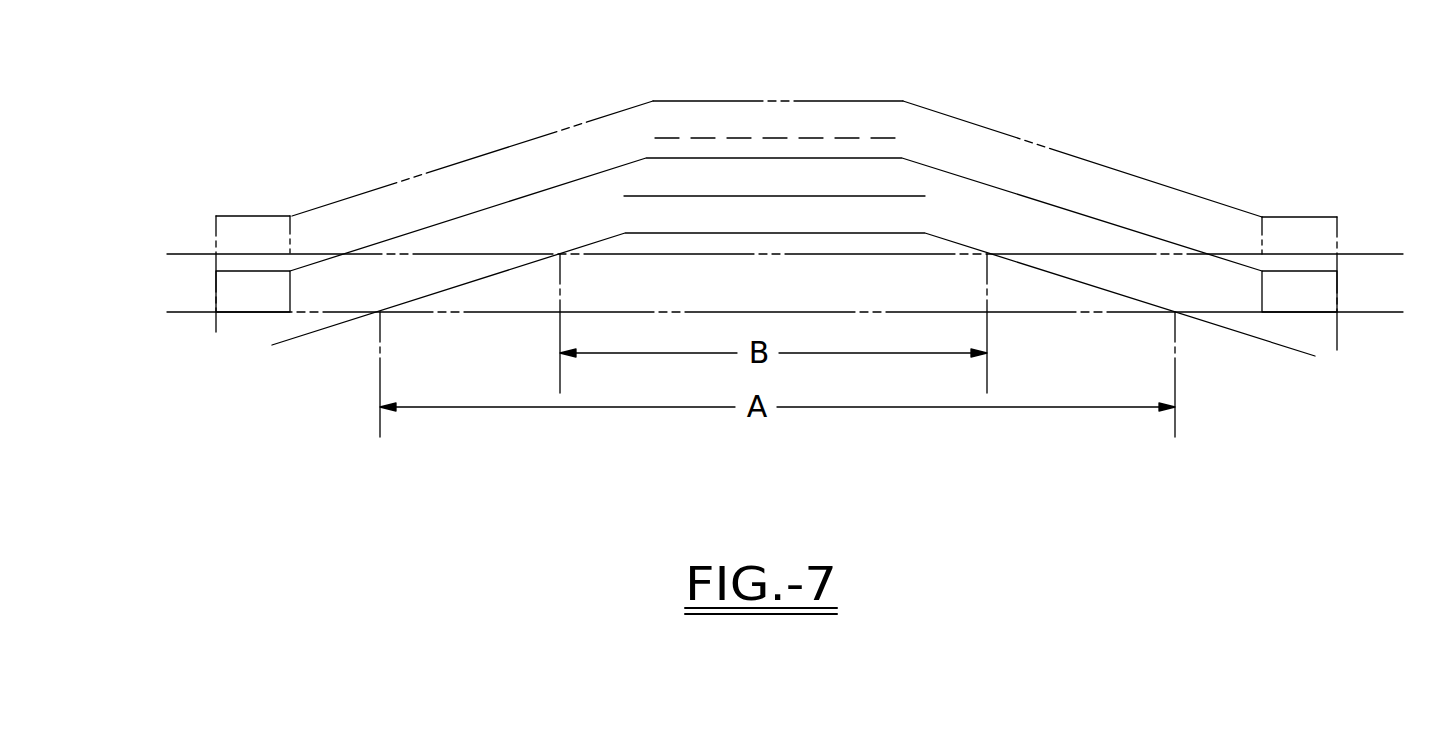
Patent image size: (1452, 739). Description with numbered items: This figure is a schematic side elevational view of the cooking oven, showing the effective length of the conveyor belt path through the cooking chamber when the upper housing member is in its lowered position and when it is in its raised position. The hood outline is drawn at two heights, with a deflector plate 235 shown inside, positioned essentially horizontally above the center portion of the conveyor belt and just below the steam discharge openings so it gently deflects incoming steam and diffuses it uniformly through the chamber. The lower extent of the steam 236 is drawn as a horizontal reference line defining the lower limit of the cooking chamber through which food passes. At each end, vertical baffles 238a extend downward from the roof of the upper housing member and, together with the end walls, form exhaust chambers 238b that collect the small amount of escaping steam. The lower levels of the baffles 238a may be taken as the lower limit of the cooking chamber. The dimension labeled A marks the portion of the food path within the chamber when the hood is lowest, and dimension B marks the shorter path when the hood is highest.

The deflector plate 235 is at (750, 138).
The lower extent of the steam 236 is at (800, 253).
The vertical baffles 238a is at (291, 287).
The exhaust chambers 238b is at (230, 290).